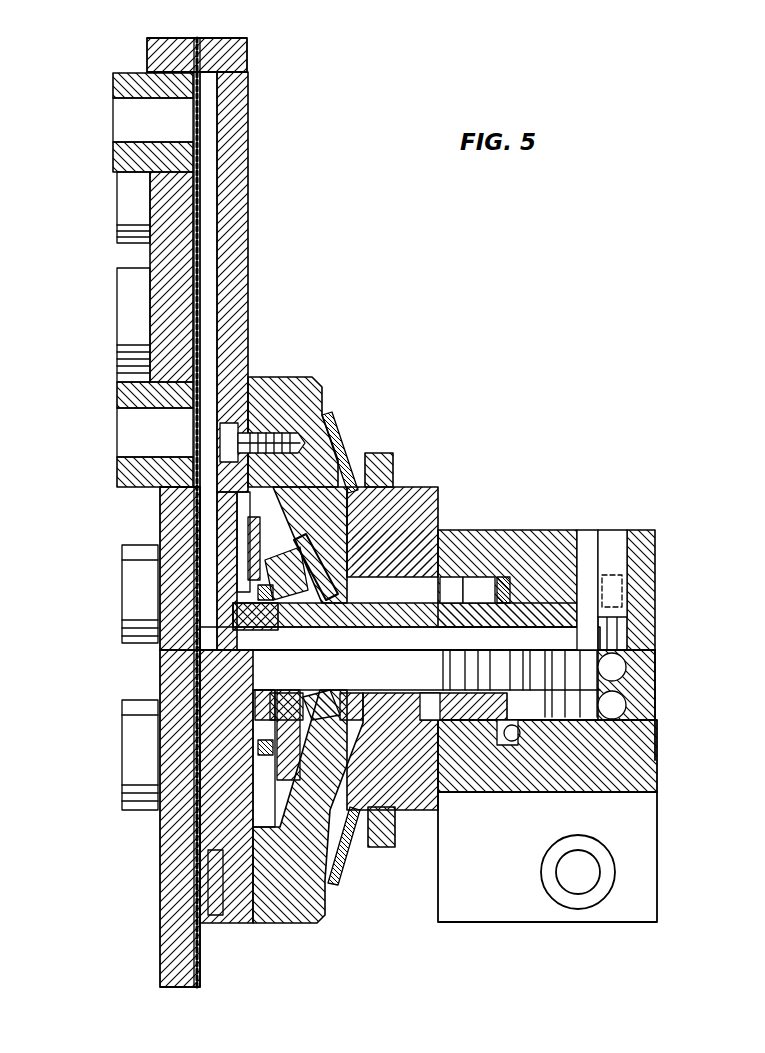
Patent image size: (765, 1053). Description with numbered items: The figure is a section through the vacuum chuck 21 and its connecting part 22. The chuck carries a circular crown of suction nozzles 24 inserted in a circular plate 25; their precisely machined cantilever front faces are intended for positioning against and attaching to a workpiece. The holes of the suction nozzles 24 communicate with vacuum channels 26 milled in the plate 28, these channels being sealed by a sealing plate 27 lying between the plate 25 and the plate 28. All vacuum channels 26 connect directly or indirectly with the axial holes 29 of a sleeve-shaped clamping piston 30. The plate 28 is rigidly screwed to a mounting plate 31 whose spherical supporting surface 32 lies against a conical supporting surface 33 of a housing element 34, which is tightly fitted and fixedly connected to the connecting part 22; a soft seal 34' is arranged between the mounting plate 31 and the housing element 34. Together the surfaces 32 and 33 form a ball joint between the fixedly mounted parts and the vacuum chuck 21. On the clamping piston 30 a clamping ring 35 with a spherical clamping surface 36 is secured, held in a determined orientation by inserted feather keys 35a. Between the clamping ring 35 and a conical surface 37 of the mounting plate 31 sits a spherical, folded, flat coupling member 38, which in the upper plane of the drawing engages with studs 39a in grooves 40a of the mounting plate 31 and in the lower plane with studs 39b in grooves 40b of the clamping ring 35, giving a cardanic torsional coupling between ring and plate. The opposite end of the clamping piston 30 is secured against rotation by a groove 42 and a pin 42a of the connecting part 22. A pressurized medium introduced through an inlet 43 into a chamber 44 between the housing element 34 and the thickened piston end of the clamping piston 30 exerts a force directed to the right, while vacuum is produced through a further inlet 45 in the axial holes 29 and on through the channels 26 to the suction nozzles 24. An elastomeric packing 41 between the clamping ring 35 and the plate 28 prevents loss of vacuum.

The vacuum chuck 21 is at (363, 308).
The connecting part 22 is at (577, 530).
The suction nozzles 24 is at (125, 82).
The circular plate 25 is at (150, 325).
The vacuum channels 26 is at (205, 268).
The sealing plate 27 is at (200, 203).
The plate 28 is at (237, 62).
The axial holes 29 is at (245, 580).
The clamping piston 30 is at (440, 603).
The mounting plate 31 is at (305, 377).
The spherical supporting surface 32 is at (345, 455).
The conical supporting surface 33 is at (372, 560).
The housing element 34 is at (427, 659).
The soft seal 34' is at (404, 661).
The clamping ring 35 is at (250, 545).
The feather keys 35a is at (262, 625).
The spherical clamping surface 36 is at (380, 720).
The conical surface 37 is at (245, 505).
The coupling member 38 is at (300, 595).
The studs 39a is at (352, 548).
The studs 39b is at (290, 710).
The grooves 40a is at (290, 560).
The grooves 40b is at (325, 705).
The elastomeric packing 41 is at (260, 598).
The groove 42 is at (615, 595).
The pin 42a is at (608, 540).
The inlet 43 is at (508, 742).
The chamber 44 is at (503, 577).
The further inlet 45 is at (655, 735).